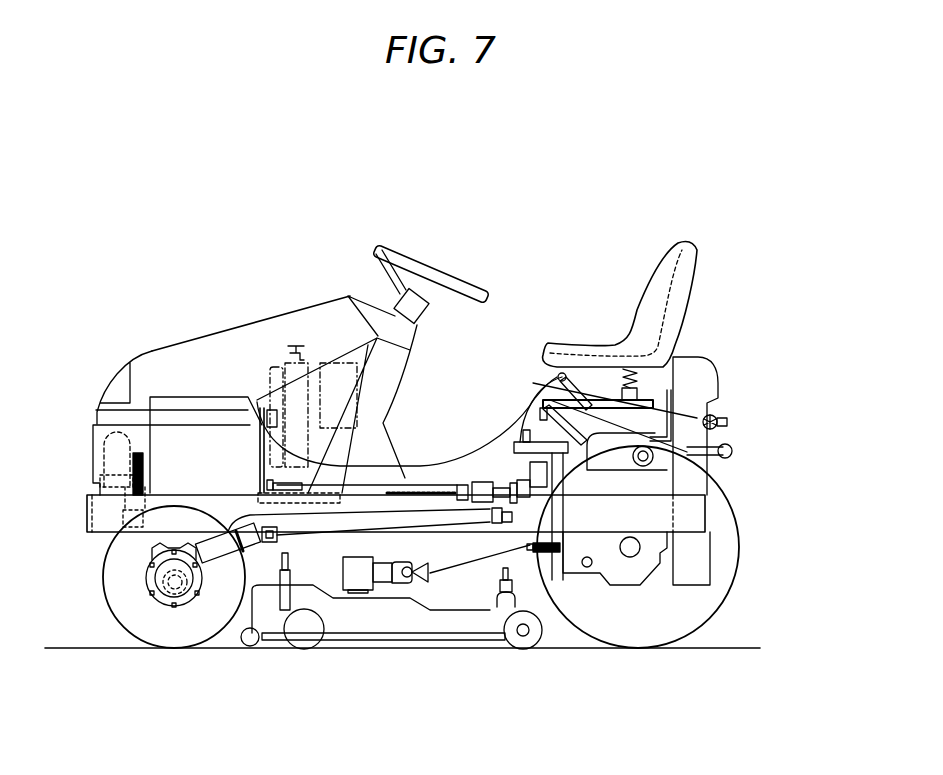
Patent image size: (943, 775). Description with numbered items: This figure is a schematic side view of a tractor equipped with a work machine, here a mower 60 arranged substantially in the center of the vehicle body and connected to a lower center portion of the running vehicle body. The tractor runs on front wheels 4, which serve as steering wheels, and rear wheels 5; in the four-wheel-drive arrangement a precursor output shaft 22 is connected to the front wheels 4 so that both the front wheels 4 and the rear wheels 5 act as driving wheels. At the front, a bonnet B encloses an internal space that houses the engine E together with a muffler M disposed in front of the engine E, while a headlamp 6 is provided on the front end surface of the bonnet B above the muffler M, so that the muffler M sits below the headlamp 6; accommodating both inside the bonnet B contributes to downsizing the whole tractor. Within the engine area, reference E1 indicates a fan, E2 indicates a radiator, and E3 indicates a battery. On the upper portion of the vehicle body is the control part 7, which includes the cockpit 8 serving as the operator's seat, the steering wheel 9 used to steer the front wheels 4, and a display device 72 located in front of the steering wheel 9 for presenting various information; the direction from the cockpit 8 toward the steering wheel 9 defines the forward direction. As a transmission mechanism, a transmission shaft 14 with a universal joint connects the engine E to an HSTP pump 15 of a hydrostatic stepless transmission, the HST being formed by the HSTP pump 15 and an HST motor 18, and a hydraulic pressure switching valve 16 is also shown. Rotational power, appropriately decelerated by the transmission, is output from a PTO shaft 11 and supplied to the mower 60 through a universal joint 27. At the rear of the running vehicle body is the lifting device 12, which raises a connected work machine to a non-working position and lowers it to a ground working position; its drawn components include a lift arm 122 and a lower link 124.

The front wheels 4 is at (104, 574).
The rear wheels 5 is at (738, 527).
The headlamp 6 is at (115, 376).
The control part 7 is at (545, 258).
The cockpit 8 is at (671, 250).
The steering wheel 9 is at (421, 270).
The PTO shaft 11 is at (554, 582).
The lifting device 12 is at (775, 437).
The transmission shaft 14 is at (427, 488).
The HSTP pump 15 is at (514, 495).
The hydraulic pressure switching valve 16 is at (518, 418).
The HST motor 18 is at (512, 480).
The precursor output shaft 22 is at (311, 516).
The universal joint 27 is at (411, 580).
The mower 60 is at (357, 622).
The display device 72 is at (370, 305).
The lift arm 122 is at (727, 420).
The lower link 124 is at (733, 452).
The bonnet B is at (222, 331).
The engine E is at (178, 430).
The fan E1 is at (273, 367).
The radiator E2 is at (296, 345).
The battery E3 is at (338, 363).
The muffler M is at (104, 456).